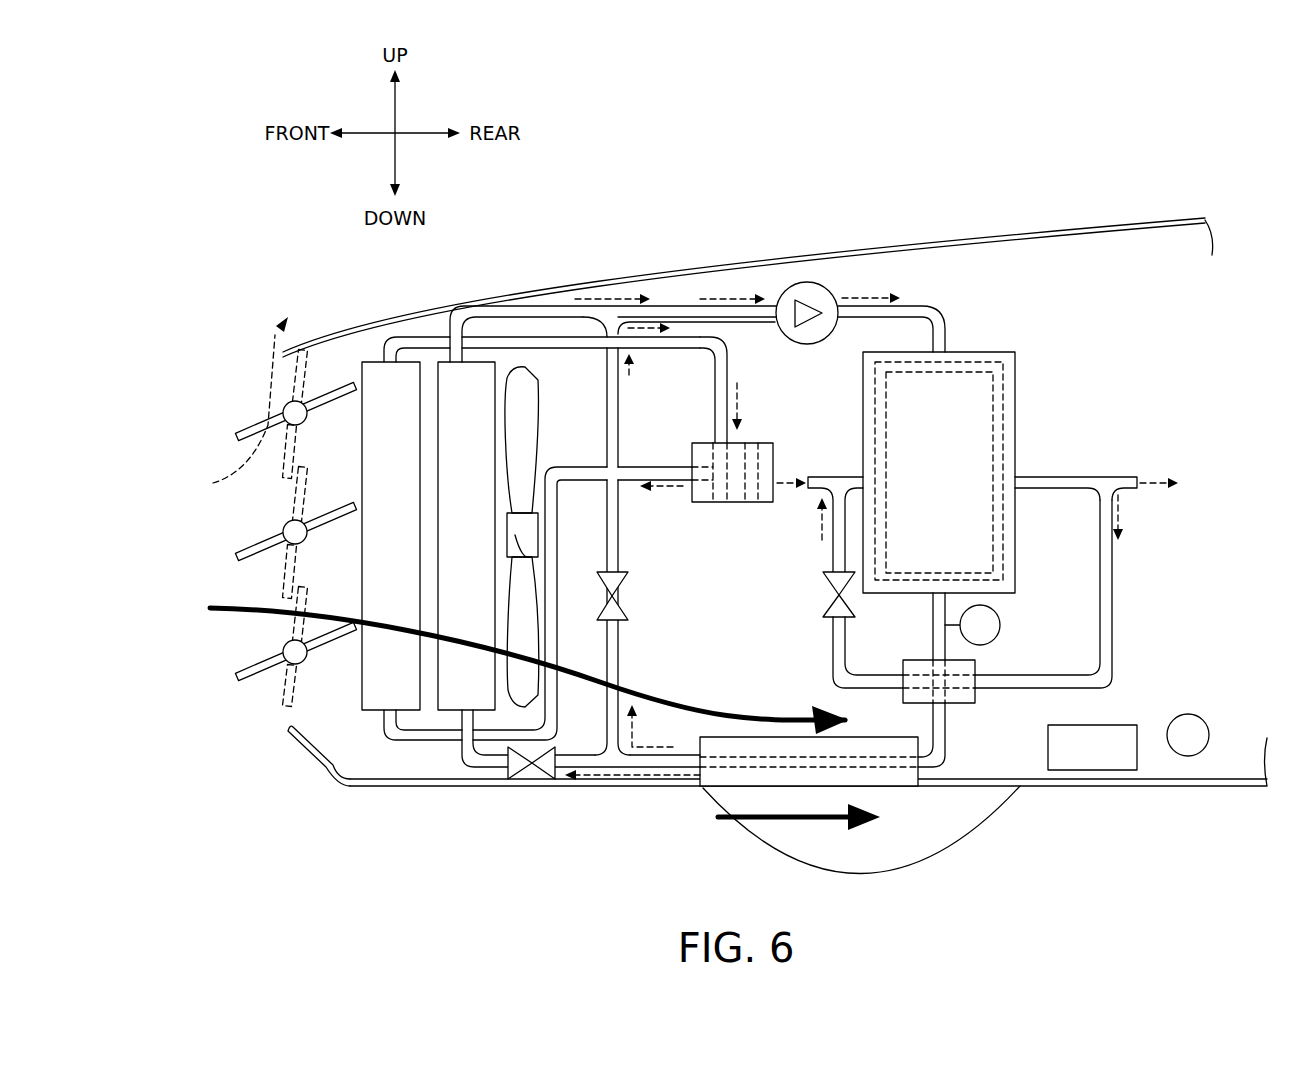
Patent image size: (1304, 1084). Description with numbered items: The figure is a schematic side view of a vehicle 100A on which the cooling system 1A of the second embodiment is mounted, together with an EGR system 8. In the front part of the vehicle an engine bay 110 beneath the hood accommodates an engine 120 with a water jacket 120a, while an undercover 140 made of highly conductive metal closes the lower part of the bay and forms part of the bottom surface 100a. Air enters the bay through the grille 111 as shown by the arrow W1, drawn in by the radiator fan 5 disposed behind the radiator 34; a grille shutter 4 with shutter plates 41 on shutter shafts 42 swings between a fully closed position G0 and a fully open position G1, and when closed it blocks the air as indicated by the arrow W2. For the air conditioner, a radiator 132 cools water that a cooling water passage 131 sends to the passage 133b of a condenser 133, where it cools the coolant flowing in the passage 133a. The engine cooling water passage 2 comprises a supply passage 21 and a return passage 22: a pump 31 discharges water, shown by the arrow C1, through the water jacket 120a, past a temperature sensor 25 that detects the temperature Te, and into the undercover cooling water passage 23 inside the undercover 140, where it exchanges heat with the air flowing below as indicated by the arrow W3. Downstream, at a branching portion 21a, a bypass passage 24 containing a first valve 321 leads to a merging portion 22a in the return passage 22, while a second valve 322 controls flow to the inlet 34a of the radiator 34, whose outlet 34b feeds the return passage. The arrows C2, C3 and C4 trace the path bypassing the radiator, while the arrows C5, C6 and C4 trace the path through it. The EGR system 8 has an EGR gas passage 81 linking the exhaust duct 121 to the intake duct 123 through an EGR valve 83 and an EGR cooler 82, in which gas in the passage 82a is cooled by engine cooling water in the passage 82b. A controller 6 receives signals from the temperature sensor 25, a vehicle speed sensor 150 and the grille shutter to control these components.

The vehicle 100A is at (998, 152).
The engine bay 110 is at (1075, 243).
The cooling water passage 2 is at (526, 296).
The grille shutter 4 is at (345, 515).
The shutter plates 41 is at (245, 552).
The shutter shafts 42 is at (290, 521).
The fully open position G1 is at (283, 652).
The fully closed position G0 is at (288, 703).
The arrow W2 is at (268, 396).
The arrow W1 is at (497, 659).
The grille 111 is at (288, 731).
The cooling system 1A is at (1196, 770).
The controller 6 is at (1138, 760).
The radiator 132 is at (372, 360).
The radiator 34 is at (487, 360).
The outlet 34b is at (457, 350).
The inlet 34a is at (457, 712).
The radiator fan 5 is at (538, 425).
The return passage 22 is at (680, 305).
The merging portion 22a is at (600, 325).
The arrow C6 is at (600, 296).
The arrow C4 is at (742, 296).
The pump 31 is at (806, 282).
The arrow C1 is at (866, 296).
The supply passage 21 is at (950, 330).
The bypass passage 24 is at (618, 658).
The first valve 321 is at (628, 590).
The arrow C3 is at (632, 366).
The cooling water passage 131 is at (728, 366).
The condenser 133 is at (770, 442).
The passage 133b is at (704, 503).
The passage 133a is at (760, 503).
The engine 120 is at (990, 350).
The water jacket 120a is at (1020, 382).
The intake duct 123 is at (857, 478).
The EGR valve 83 is at (822, 605).
The exhaust duct 121 is at (1125, 472).
The EGR gas passage 81 is at (1113, 604).
The EGR cooler 82 is at (960, 705).
The passage 82a is at (975, 665).
The passage 82b is at (926, 665).
The temperature sensor 25 is at (1000, 625).
The undercover cooling water passage 23 is at (915, 790).
The branching portion 21a is at (600, 752).
The second valve 322 is at (525, 782).
The arrow C5 is at (600, 781).
The arrow C2 is at (662, 758).
The undercover 140 is at (708, 790).
The arrow W3 is at (776, 822).
The bottom surface 100a is at (1080, 786).
The vehicle speed sensor 150 is at (1186, 713).
The EGR system 8 is at (1200, 563).